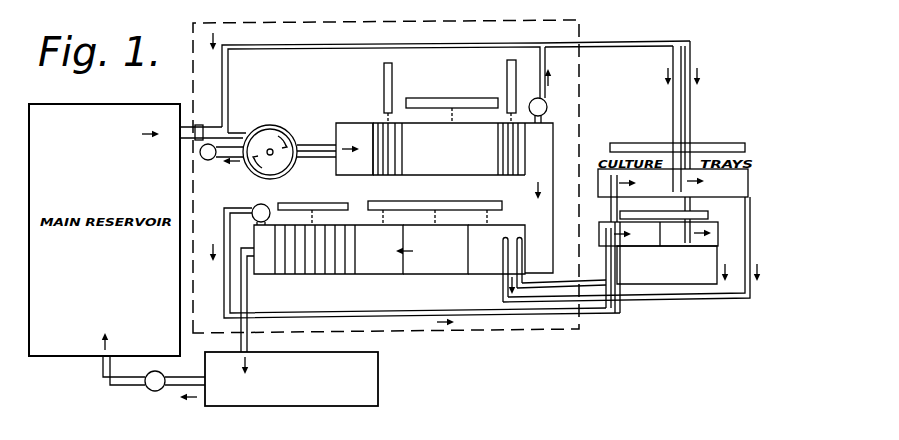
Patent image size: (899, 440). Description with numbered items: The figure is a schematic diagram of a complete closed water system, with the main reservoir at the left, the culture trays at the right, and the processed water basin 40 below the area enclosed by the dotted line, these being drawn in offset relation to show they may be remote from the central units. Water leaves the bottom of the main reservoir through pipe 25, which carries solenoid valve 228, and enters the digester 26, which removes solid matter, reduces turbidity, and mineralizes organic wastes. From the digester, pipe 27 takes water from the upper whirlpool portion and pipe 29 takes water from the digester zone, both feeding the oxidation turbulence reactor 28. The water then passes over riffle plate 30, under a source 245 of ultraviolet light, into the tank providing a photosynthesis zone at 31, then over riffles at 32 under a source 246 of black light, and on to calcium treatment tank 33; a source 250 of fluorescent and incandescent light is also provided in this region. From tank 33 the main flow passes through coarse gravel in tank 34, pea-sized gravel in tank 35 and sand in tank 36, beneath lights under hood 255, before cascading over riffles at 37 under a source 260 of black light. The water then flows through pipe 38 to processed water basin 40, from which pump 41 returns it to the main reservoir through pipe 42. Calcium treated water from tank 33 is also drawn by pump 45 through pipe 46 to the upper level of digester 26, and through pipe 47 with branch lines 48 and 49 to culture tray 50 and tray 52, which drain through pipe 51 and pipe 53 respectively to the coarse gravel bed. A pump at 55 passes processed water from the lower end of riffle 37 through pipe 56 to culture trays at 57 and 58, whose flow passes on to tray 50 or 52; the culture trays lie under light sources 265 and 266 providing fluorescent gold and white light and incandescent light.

The pipe 25 is at (190, 124).
The solenoid valve 228 is at (204, 126).
The digester 26 is at (256, 170).
The pipe 27 is at (309, 158).
The pipe 29 is at (328, 146).
The oxidation turbulence reactor 28 is at (356, 133).
The riffle plate 30 is at (383, 173).
The photosynthesis zone tank 31 is at (423, 136).
The riffles 32 is at (504, 173).
The calcium treatment tank 33 is at (540, 164).
The pump 45 is at (547, 113).
The pipe 46 is at (489, 47).
The pipe 47 is at (640, 45).
The branch line 48 is at (673, 124).
The branch line 49 is at (691, 119).
The source of ultraviolet light 245 is at (395, 91).
The source of black light 246 is at (507, 67).
The source of fluorescent and incandescent light 250 is at (466, 97).
The hood 255 is at (453, 196).
The source of black light 260 is at (323, 199).
The light source 265 is at (723, 143).
The light source 266 is at (705, 214).
The coarse gravel tank 34 is at (490, 255).
The pea-sized gravel tank 35 is at (447, 250).
The sand tank 36 is at (382, 249).
The riffles 37 is at (331, 272).
The pipe 38 is at (248, 299).
The processed water basin 40 is at (368, 378).
The pump 41 is at (160, 391).
The pipe 42 is at (103, 384).
The culture tray 50 is at (727, 190).
The pipe 51 is at (752, 241).
The tray 52 is at (682, 242).
The pipe 53 is at (668, 283).
The pump 55 is at (268, 207).
The pipe 56 is at (224, 298).
The culture tray 57 is at (606, 193).
The culture tray 58 is at (606, 253).